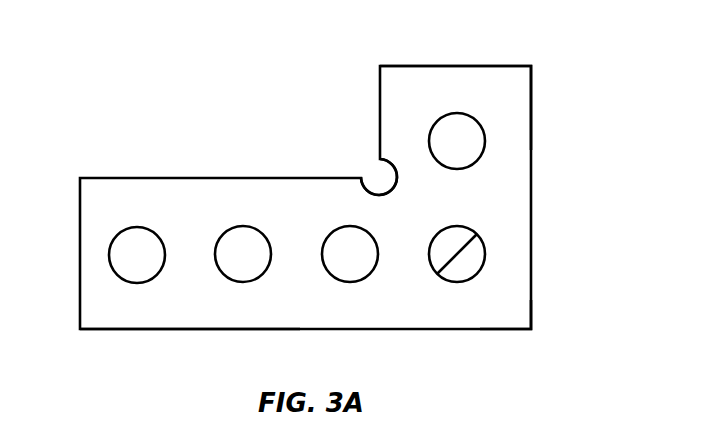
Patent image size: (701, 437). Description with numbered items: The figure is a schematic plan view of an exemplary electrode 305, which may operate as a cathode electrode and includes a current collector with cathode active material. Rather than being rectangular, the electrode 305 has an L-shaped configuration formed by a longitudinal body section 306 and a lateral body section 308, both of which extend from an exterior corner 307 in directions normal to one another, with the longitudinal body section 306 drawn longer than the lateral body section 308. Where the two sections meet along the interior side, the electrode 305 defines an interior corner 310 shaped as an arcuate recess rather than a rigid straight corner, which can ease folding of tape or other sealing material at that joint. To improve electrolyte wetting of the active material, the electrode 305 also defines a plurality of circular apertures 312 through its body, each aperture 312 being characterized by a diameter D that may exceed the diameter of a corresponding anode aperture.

The electrode 305 is at (531, 218).
The longitudinal body section 306 is at (143, 329).
The exterior corner 307 is at (532, 328).
The lateral body section 308 is at (531, 95).
The interior corner 310 is at (370, 188).
The aperture 312 is at (108, 255).
The diameter D is at (460, 253).